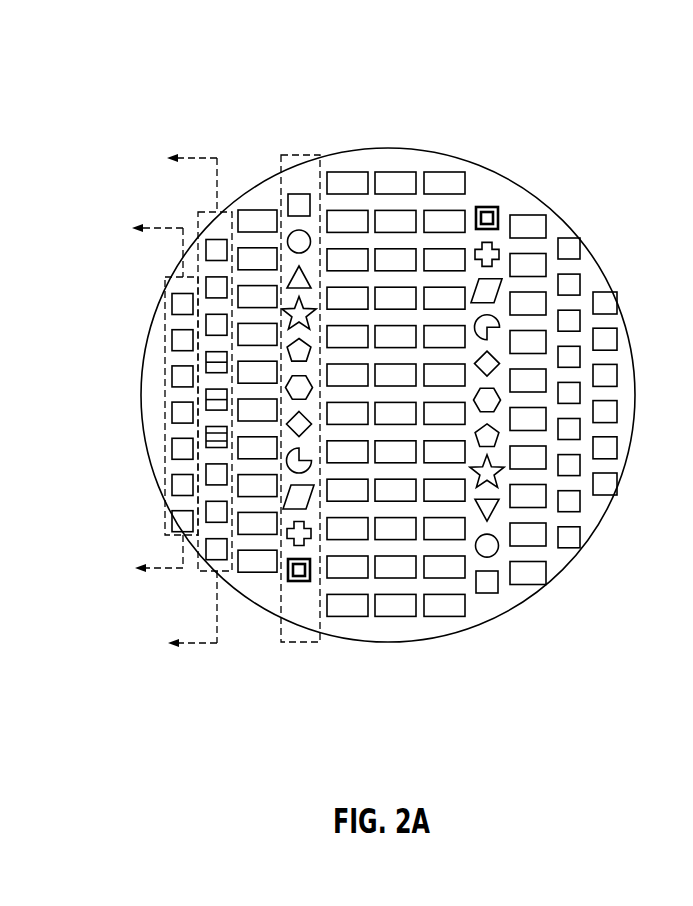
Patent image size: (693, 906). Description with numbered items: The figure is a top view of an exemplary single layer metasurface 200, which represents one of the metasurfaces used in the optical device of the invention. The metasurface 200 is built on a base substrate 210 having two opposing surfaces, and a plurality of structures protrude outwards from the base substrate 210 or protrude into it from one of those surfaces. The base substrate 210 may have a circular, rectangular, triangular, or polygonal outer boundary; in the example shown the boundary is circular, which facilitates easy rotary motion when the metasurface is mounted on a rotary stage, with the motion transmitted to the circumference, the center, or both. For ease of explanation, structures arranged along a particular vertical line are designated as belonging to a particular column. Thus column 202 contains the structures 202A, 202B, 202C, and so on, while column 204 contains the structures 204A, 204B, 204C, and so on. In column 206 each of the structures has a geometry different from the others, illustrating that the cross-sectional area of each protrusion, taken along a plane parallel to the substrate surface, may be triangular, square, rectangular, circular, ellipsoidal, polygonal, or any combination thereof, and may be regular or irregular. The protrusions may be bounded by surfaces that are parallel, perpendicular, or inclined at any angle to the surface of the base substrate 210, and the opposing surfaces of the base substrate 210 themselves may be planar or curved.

The single layer metasurface 200 is at (357, 400).
The column 202 is at (131, 406).
The structure 202A is at (170, 303).
The structure 202B is at (170, 340).
The structure 202C is at (170, 377).
The column 204 is at (146, 417).
The structure 204A is at (207, 512).
The structure 204B is at (208, 475).
The structure 204C is at (207, 435).
The column 206 is at (293, 642).
The base substrate 210 is at (562, 212).